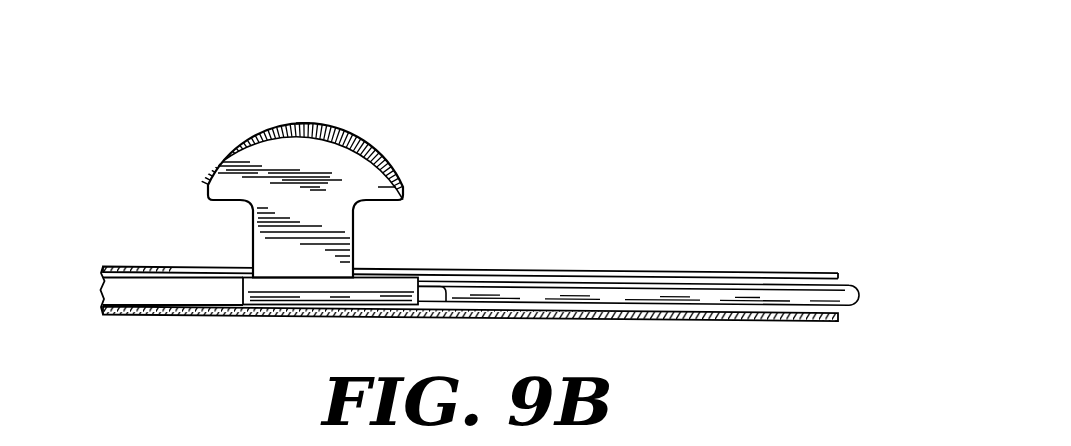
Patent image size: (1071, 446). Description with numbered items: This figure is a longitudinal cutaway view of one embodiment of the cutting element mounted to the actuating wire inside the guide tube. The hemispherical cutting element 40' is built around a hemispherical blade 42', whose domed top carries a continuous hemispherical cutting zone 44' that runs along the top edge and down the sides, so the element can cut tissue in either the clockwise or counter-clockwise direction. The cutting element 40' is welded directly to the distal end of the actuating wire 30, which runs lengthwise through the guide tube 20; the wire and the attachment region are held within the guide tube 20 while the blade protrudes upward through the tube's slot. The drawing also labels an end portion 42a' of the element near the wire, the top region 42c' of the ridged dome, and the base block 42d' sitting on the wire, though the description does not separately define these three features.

The guide tube 20 is at (684, 320).
The actuating wire 30 is at (752, 300).
The hemispherical cutting element 40' is at (296, 183).
The hemispherical blade 42' is at (339, 200).
The knob end portion 42a' is at (460, 325).
The knob ridged top 42c' is at (272, 105).
The knob base block 42d' is at (313, 318).
The hemispherical cutting zone 44' is at (331, 161).